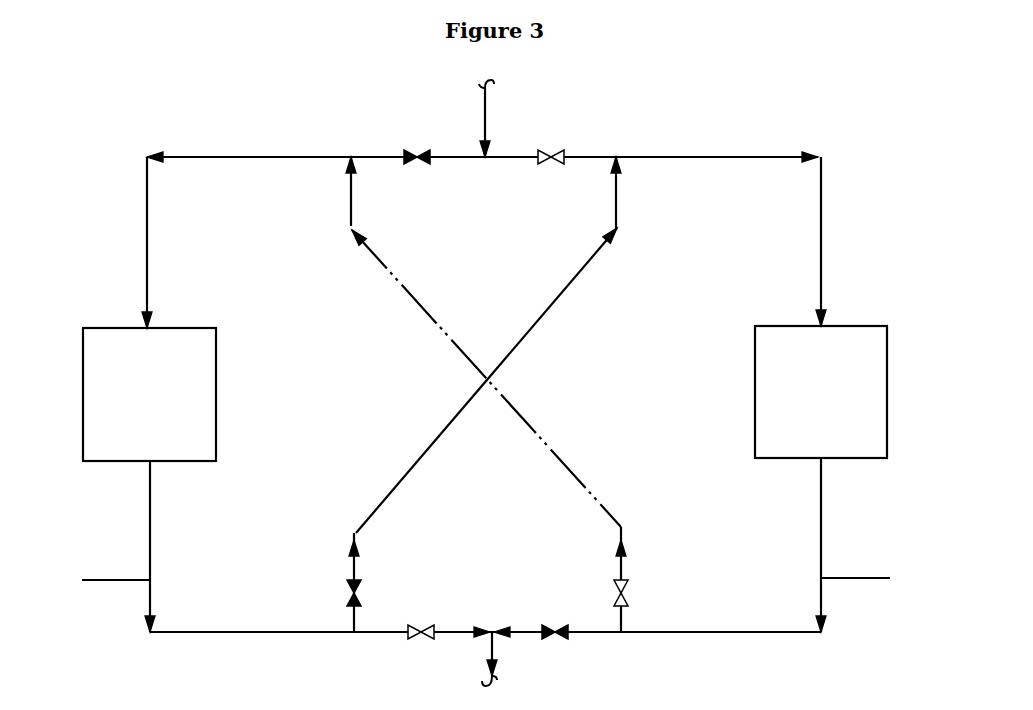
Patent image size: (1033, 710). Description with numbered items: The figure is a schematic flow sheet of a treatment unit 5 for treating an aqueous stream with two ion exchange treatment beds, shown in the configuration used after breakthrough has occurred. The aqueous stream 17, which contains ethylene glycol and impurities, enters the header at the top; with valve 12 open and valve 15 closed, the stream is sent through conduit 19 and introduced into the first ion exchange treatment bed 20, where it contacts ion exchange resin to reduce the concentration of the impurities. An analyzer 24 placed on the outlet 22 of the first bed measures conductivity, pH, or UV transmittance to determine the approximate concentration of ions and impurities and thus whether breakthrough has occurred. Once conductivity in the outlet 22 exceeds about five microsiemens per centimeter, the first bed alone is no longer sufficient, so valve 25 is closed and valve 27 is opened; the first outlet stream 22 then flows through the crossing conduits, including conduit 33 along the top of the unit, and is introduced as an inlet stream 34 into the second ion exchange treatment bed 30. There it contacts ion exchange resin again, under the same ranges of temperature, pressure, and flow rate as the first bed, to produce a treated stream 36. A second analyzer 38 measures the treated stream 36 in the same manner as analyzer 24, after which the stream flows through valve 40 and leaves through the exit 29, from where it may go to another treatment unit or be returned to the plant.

The treatment unit 5 is at (650, 125).
The valve 12 is at (416, 145).
The valve 15 is at (551, 145).
The aqueous stream 17 is at (501, 118).
The conduit 19 is at (131, 242).
The first ion exchange treatment bed 20 is at (149, 394).
The outlet 22 is at (134, 546).
The analyzer 24 is at (100, 580).
The valve 25 is at (421, 619).
The valve 27 is at (469, 394).
The exit 29 is at (500, 656).
The second ion exchange treatment bed 30 is at (821, 392).
The conduit 33 is at (717, 145).
The inlet stream 34 is at (838, 241).
The treated stream 36 is at (841, 545).
The second analyzer 38 is at (871, 578).
The valve 40 is at (556, 620).